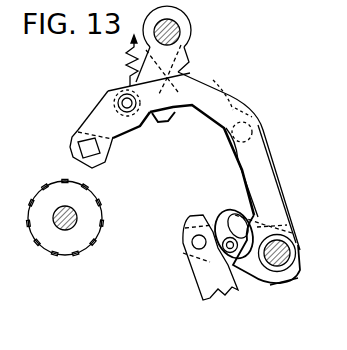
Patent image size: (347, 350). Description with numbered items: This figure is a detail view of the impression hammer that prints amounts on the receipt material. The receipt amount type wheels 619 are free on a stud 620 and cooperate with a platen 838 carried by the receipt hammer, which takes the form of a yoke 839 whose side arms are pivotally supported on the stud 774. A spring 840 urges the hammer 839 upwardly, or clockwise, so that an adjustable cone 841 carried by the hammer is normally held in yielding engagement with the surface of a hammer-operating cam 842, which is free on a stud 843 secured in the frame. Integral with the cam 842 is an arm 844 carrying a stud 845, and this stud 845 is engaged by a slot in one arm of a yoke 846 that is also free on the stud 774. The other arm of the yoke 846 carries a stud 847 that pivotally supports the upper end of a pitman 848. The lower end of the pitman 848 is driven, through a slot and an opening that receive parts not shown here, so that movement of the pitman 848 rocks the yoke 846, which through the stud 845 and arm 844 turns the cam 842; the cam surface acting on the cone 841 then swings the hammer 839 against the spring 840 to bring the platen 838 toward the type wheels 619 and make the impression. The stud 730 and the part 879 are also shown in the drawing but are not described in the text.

The stud 843 is at (175, 27).
The arm 844 is at (187, 62).
The yoke 839 is at (228, 98).
The stud 845 is at (245, 102).
The spring 840 is at (126, 61).
The adjustable cone 841 is at (108, 90).
The hammer-operating cam 842 is at (144, 118).
The platen 838 is at (90, 164).
The amount type wheels 619 is at (96, 202).
The stud 620 is at (75, 222).
The stud 774 is at (277, 260).
The yoke 846 is at (276, 288).
The oval link 879 is at (237, 213).
The pivot pin 730 is at (222, 225).
The stud 847 is at (195, 238).
The pitman 848 is at (205, 277).